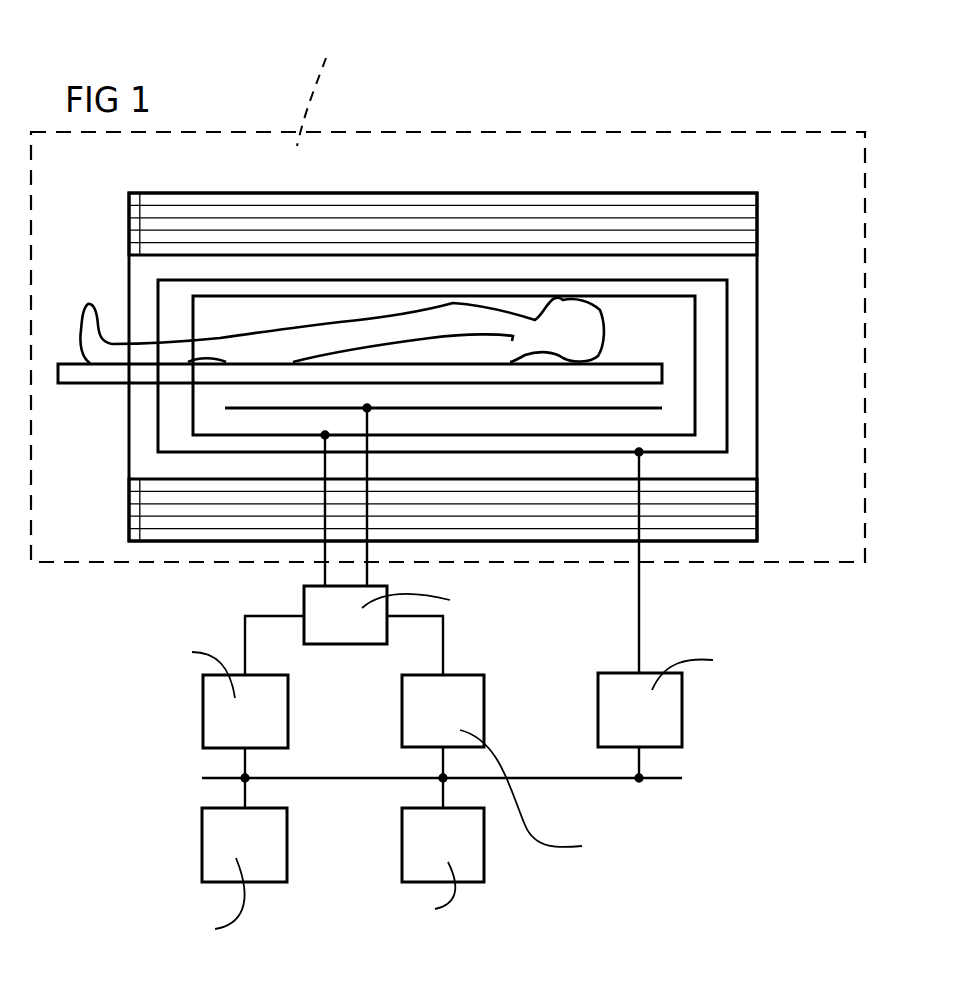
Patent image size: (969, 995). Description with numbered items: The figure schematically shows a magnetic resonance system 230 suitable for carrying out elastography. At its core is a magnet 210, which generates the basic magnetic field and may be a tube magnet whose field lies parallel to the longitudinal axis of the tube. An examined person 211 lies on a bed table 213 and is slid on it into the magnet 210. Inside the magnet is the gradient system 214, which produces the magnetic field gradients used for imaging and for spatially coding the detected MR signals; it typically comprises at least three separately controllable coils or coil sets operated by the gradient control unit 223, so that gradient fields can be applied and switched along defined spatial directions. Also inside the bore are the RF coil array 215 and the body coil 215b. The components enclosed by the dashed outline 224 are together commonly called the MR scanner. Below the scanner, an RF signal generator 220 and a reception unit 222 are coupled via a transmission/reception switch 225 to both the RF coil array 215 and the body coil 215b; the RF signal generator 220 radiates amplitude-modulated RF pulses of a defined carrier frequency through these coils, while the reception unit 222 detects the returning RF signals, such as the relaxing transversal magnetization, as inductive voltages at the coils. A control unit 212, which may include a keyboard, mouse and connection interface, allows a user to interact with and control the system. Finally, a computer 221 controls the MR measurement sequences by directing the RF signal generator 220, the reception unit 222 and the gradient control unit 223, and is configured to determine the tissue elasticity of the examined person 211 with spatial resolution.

The magnetic resonance system 230 is at (697, 73).
The dashed outline 224 is at (472, 156).
The magnet 210 is at (248, 202).
The RF coil array 215 is at (697, 315).
The gradient system 214 is at (728, 358).
The body coil 215b is at (648, 408).
The bed table 213 is at (84, 375).
The examined person 211 is at (604, 332).
The transmission/reception switch 225 is at (345, 645).
The reception unit 222 is at (203, 714).
The RF signal generator 220 is at (485, 710).
The gradient control unit 223 is at (683, 710).
The control unit 212 is at (202, 846).
The computer 221 is at (402, 846).